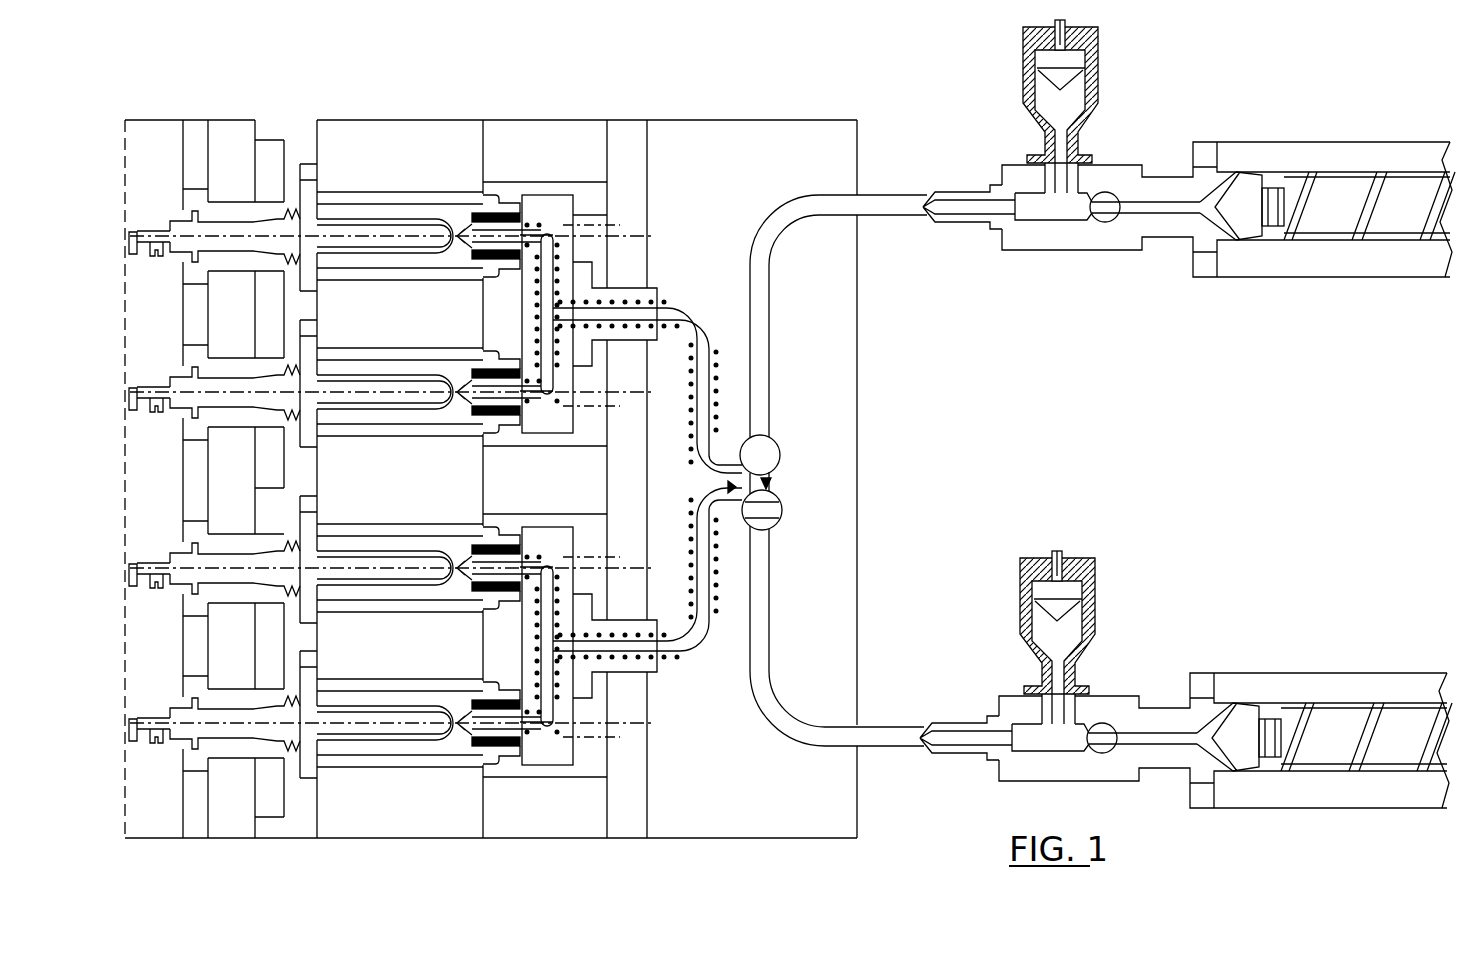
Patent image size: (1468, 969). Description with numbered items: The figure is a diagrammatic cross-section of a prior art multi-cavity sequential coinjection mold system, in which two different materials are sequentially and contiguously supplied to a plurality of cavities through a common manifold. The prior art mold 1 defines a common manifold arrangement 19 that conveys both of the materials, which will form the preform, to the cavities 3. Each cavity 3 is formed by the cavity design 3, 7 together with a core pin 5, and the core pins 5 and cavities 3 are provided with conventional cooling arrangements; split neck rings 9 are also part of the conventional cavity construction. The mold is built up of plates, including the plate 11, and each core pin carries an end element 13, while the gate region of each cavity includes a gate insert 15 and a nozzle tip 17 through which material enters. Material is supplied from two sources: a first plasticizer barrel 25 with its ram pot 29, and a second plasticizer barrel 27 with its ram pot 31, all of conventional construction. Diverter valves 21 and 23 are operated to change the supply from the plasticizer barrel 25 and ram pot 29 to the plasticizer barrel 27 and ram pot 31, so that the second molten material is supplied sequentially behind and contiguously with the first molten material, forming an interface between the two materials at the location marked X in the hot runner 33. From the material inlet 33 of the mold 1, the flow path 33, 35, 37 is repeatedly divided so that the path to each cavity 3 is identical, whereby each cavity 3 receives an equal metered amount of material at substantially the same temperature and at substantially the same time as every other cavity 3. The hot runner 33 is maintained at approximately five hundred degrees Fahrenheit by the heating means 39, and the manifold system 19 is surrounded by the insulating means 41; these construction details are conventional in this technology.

The mold 1 is at (738, 106).
The cavity 3 is at (375, 218).
The core pin 5 is at (386, 244).
The cavity design 7 is at (343, 218).
The split neck ring 9 is at (288, 193).
The clamp plate 11 is at (225, 125).
The core rod end cap 13 is at (136, 255).
The gate insert 15 is at (466, 196).
The nozzle tip 17 is at (462, 250).
The manifold arrangement 19 is at (664, 479).
The diverter valve 21 is at (775, 452).
The diverter valve 23 is at (765, 512).
The plasticizer barrel 25 is at (1323, 267).
The plasticizer barrel 27 is at (1342, 681).
The ram pot 29 is at (1074, 94).
The ram pot 31 is at (1070, 627).
The hot runner 33 is at (728, 470).
The flow path 35 is at (696, 390).
The flow path 37 is at (554, 228).
The heating means 39 is at (616, 305).
The insulating means 41 is at (663, 138).